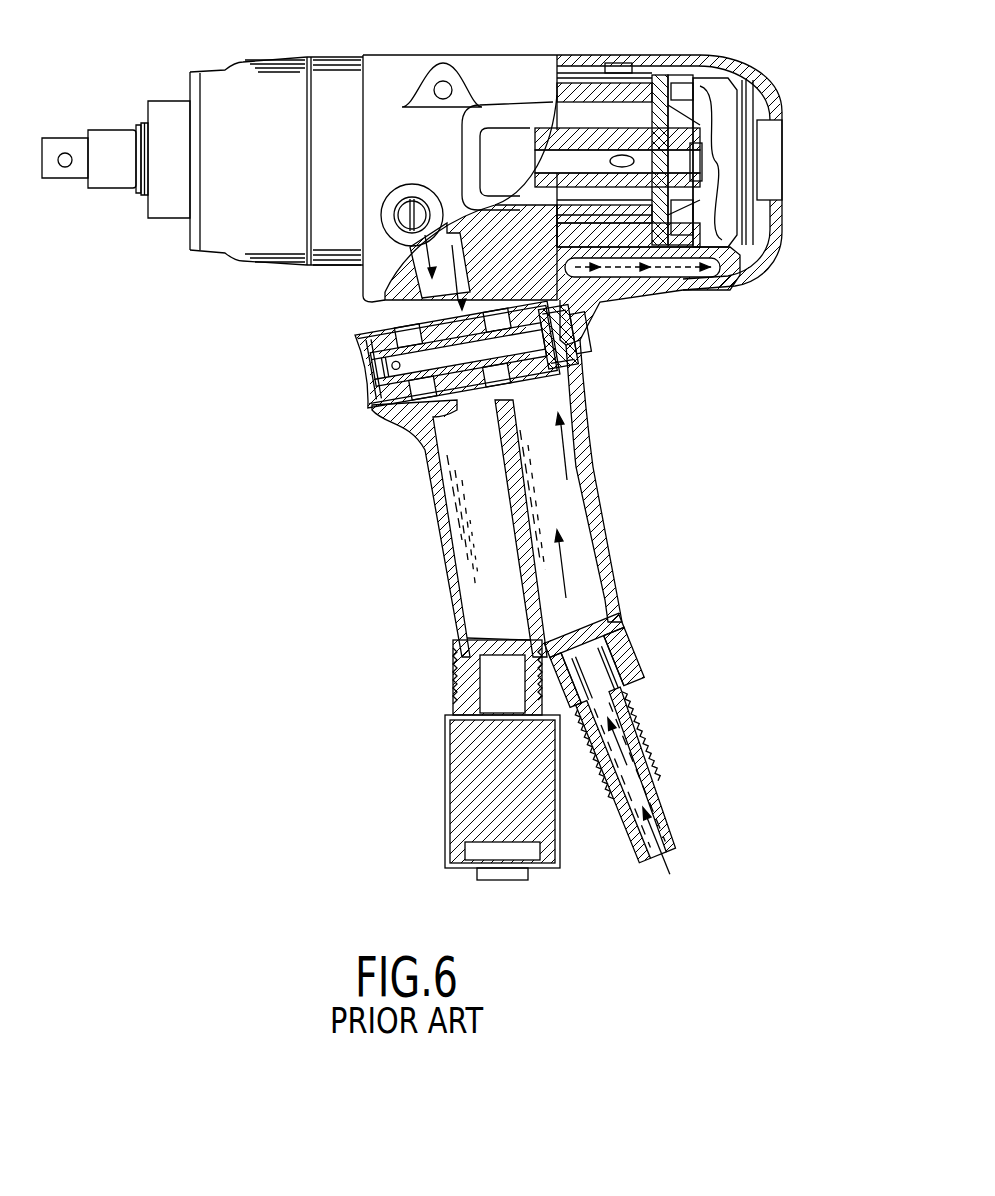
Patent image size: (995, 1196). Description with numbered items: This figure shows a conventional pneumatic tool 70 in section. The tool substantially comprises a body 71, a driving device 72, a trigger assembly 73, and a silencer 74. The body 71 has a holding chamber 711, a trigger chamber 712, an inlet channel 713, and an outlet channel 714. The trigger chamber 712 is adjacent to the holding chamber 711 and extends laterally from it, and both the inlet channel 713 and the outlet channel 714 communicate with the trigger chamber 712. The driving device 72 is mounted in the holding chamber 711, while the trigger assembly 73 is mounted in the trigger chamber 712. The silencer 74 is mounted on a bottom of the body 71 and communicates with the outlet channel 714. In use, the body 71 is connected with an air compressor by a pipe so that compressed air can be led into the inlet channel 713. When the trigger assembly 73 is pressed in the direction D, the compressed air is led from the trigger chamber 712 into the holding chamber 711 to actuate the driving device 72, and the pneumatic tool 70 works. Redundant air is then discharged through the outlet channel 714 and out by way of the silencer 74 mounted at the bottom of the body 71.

The conventional pneumatic tool 70 is at (632, 462).
The body 71 is at (600, 295).
The holding chamber 711 is at (727, 233).
The trigger chamber 712 is at (557, 344).
The inlet channel 713 is at (597, 577).
The outlet channel 714 is at (445, 438).
The driving device 72 is at (672, 137).
The trigger assembly 73 is at (338, 320).
The silencer 74 is at (428, 750).
The direction D is at (338, 359).